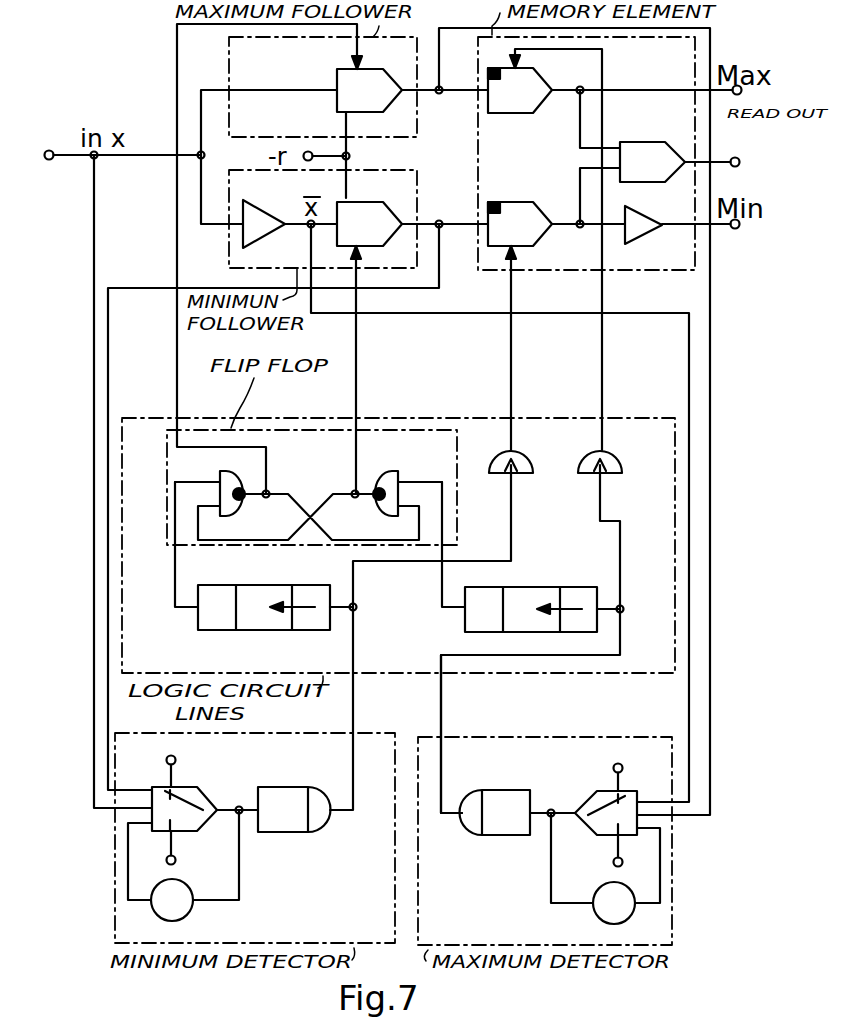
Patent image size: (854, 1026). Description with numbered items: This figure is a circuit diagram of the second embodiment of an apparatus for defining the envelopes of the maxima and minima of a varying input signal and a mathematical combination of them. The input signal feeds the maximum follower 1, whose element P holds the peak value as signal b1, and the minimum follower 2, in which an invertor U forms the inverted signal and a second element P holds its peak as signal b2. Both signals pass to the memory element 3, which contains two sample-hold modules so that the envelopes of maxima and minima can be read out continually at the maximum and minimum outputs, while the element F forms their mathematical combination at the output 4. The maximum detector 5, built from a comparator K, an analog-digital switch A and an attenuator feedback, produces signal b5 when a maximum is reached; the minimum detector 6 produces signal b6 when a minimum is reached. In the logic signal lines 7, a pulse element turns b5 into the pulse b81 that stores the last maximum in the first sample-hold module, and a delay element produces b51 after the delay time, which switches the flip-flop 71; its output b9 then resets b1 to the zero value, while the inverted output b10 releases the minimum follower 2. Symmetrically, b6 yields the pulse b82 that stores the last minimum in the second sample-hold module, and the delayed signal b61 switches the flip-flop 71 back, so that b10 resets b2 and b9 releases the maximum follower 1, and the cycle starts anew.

The maximum follower 1 is at (323, 87).
The minimum follower 2 is at (323, 217).
The memory element 3 is at (586, 153).
The output 4 is at (723, 151).
The maximum detector 5 is at (545, 841).
The minimum detector 6 is at (255, 838).
The logic signal lines 7 is at (398, 615).
The flip-flop 71 is at (312, 487).
The maximum follower output signal b1 is at (445, 110).
The minimum follower output signal b2 is at (445, 209).
The maximum detector output signal b5 is at (461, 734).
The delayed maximum detector signal b51 is at (512, 610).
The minimum detector output signal b6 is at (328, 708).
The delayed minimum detector signal b61 is at (252, 609).
The pulse signal to sample-hold module S1 b81 is at (582, 249).
The pulse signal to sample-hold module S2 b82 is at (480, 348).
The flip-flop output signal b9 is at (269, 259).
The inverted flip-flop output signal b10 is at (328, 370).